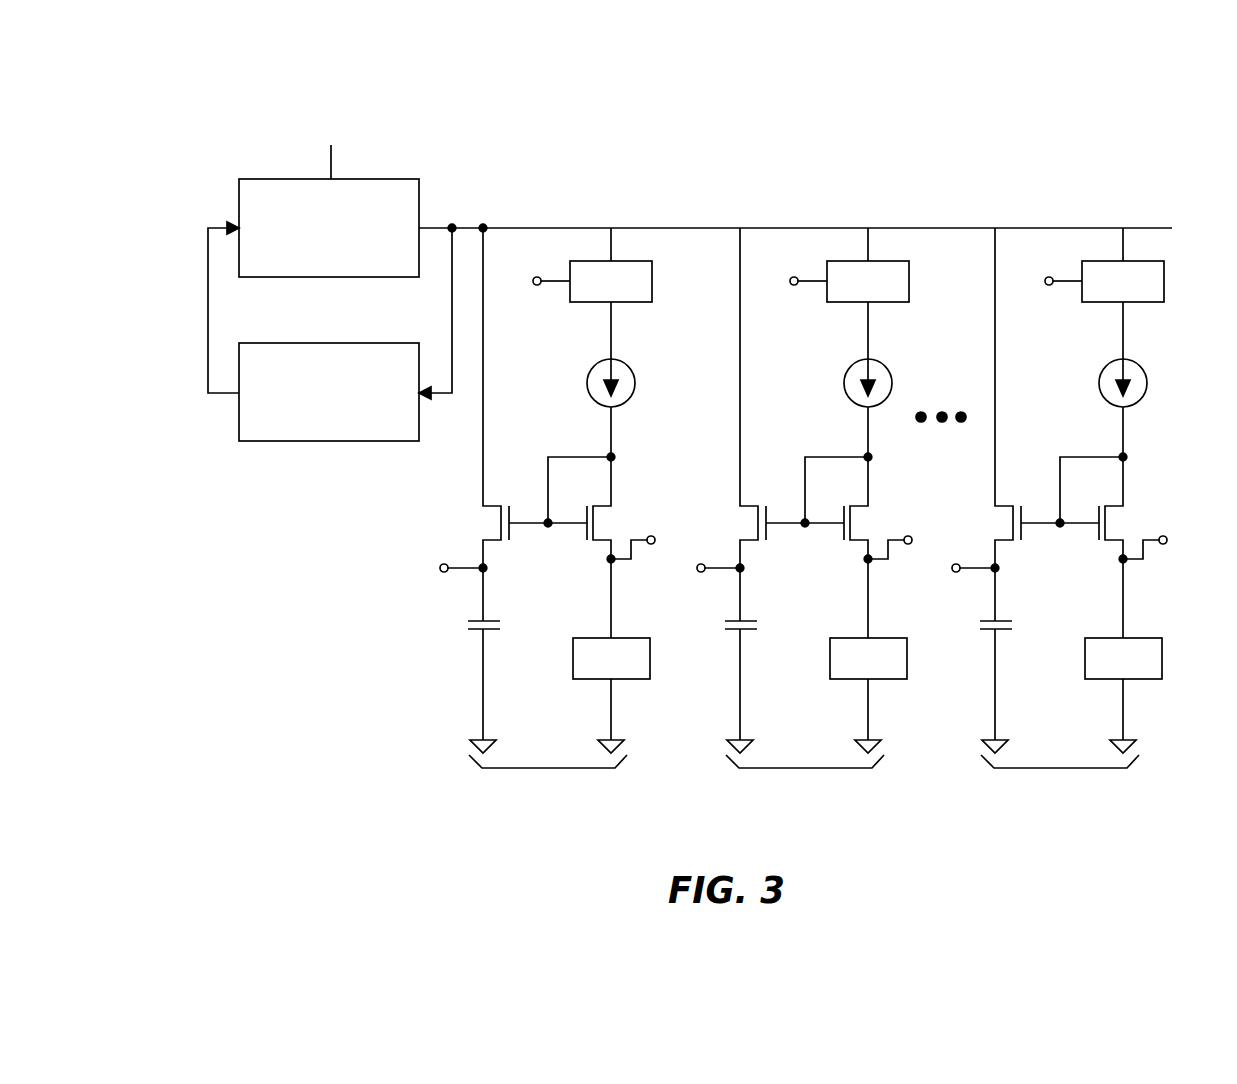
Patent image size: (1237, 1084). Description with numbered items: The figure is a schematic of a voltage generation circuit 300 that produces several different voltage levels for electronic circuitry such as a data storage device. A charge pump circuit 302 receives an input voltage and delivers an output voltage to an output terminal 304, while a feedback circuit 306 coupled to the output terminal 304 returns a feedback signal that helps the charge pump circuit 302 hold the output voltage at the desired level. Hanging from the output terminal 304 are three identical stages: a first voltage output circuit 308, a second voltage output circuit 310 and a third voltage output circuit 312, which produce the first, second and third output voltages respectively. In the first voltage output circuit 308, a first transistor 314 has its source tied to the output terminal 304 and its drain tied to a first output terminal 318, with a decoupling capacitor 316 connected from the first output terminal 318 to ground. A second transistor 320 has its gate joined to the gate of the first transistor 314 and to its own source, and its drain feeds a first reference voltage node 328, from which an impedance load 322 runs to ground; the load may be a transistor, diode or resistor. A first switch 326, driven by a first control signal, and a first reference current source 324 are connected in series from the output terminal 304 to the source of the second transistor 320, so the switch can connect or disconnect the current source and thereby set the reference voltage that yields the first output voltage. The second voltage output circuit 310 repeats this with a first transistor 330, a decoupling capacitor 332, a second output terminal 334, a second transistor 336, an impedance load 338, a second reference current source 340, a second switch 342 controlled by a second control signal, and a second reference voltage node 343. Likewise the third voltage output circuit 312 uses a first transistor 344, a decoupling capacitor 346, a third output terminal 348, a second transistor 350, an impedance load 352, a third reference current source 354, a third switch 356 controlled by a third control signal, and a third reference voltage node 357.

The voltage generation circuit 300 is at (822, 186).
The charge pump circuit 302 is at (272, 177).
The output terminal 304 is at (489, 226).
The feedback circuit 306 is at (334, 442).
The first voltage output circuit 308 is at (555, 768).
The second voltage output circuit 310 is at (805, 778).
The third voltage output circuit 312 is at (1060, 778).
The first transistor 314 is at (490, 520).
The decoupling capacitor 316 is at (476, 636).
The first output terminal 318 is at (478, 572).
The second transistor 320 is at (608, 525).
The impedance load 322 is at (596, 636).
The first reference current source 324 is at (588, 374).
The first switch 326 is at (652, 270).
The first reference voltage node 328 is at (608, 559).
The first transistor 330 is at (759, 398).
The decoupling capacitor 332 is at (720, 654).
The second output terminal 334 is at (707, 579).
The second transistor 336 is at (863, 506).
The impedance load 338 is at (864, 649).
The second reference current source 340 is at (859, 407).
The second switch 342 is at (864, 293).
The second reference voltage node 343 is at (873, 541).
The first transistor 344 is at (1014, 398).
The decoupling capacitor 346 is at (975, 654).
The third output terminal 348 is at (962, 579).
The second transistor 350 is at (1118, 506).
The impedance load 352 is at (1119, 649).
The third reference current source 354 is at (1114, 407).
The third switch 356 is at (1119, 293).
The third reference voltage node 357 is at (1128, 541).